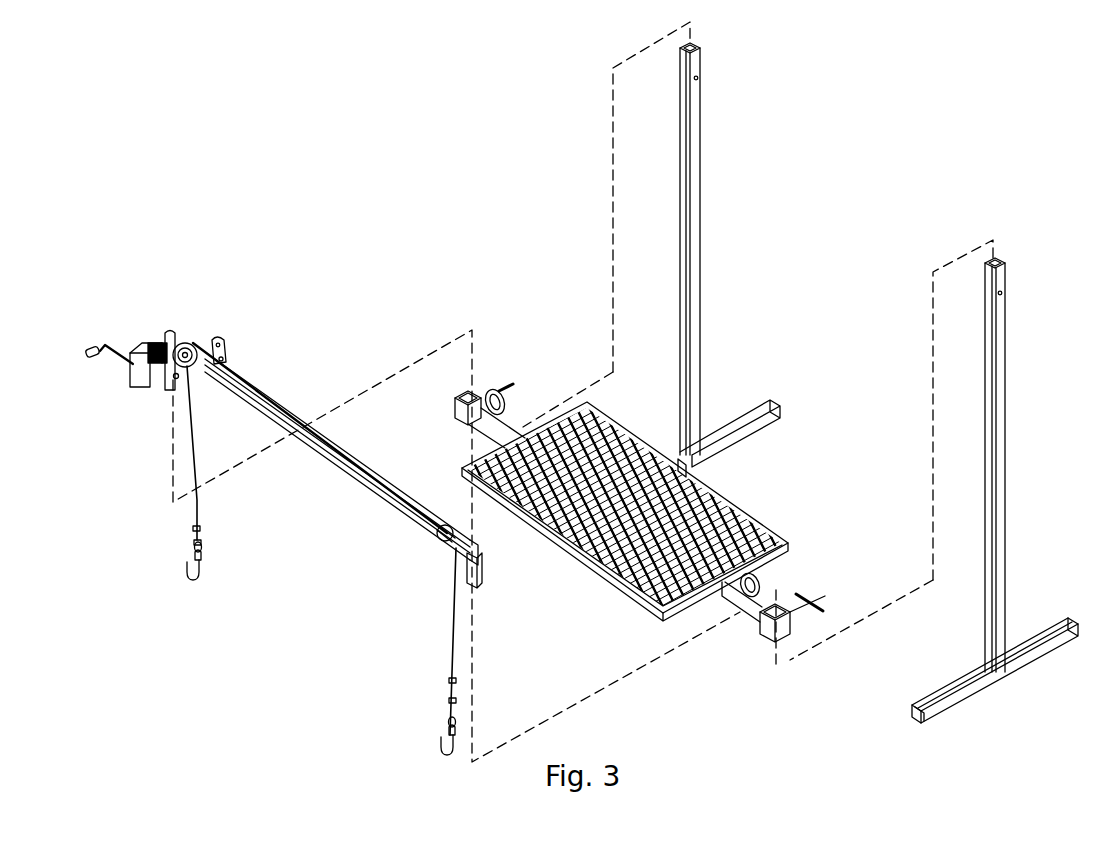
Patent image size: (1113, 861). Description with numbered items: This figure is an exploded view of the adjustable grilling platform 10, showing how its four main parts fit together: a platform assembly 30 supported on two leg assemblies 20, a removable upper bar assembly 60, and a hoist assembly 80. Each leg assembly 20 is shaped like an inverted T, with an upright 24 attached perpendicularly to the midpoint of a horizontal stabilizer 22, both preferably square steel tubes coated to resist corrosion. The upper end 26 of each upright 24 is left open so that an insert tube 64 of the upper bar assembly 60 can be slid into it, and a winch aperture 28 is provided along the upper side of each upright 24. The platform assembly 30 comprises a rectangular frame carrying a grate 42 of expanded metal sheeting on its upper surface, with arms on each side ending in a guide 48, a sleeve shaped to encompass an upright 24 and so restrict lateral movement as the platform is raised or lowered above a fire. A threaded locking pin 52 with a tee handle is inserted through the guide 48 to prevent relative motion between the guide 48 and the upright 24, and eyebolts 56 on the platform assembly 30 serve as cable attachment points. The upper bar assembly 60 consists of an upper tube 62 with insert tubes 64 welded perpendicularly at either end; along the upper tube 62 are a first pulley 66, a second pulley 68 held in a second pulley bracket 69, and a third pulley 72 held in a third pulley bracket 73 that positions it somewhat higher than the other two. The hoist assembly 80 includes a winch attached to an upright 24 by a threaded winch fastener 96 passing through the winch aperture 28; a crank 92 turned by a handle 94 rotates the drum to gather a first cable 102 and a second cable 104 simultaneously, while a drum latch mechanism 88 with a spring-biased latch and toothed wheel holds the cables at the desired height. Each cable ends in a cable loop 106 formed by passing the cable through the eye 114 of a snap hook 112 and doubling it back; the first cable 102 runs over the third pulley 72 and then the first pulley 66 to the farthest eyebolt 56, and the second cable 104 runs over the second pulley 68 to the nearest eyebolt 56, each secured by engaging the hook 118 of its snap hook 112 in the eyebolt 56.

The adjustable grilling platform 10 is at (922, 128).
The leg assembly 20 is at (758, 268).
The horizontal stabilizer 22 is at (960, 700).
The upright 24 is at (695, 212).
The upper end 26 is at (697, 48).
The winch aperture 28 is at (697, 80).
The platform assembly 30 is at (702, 672).
The grate 42 is at (733, 500).
The guide 48 is at (455, 407).
The locking pin 52 is at (505, 386).
The eyebolt 56 is at (506, 402).
The upper bar assembly 60 is at (276, 484).
The upper tube 62 is at (325, 455).
The insert tube 64 is at (168, 380).
The first pulley 66 is at (438, 538).
The second pulley 68 is at (191, 345).
The second pulley bracket 69 is at (185, 343).
The third pulley 72 is at (226, 345).
The third pulley bracket 73 is at (232, 360).
The hoist assembly 80 is at (134, 300).
The drum latch mechanism 88 is at (132, 368).
The crank 92 is at (122, 346).
The handle 94 is at (87, 351).
The winch fastener 96 is at (168, 378).
The first cable 102 is at (324, 539).
The second cable 104 is at (200, 421).
The cable loop 106 is at (194, 530).
The snap hook 112 is at (203, 555).
The eye 114 is at (202, 546).
The hook 118 is at (188, 563).